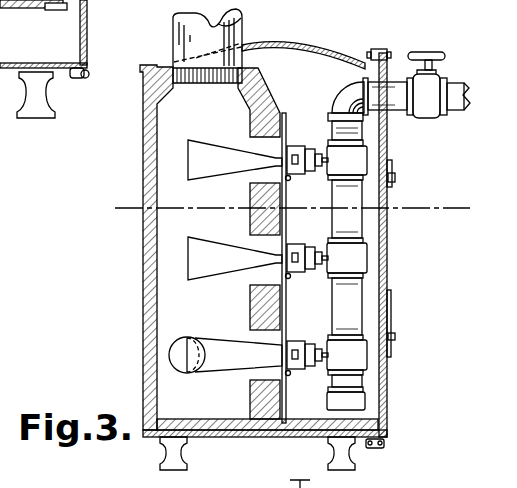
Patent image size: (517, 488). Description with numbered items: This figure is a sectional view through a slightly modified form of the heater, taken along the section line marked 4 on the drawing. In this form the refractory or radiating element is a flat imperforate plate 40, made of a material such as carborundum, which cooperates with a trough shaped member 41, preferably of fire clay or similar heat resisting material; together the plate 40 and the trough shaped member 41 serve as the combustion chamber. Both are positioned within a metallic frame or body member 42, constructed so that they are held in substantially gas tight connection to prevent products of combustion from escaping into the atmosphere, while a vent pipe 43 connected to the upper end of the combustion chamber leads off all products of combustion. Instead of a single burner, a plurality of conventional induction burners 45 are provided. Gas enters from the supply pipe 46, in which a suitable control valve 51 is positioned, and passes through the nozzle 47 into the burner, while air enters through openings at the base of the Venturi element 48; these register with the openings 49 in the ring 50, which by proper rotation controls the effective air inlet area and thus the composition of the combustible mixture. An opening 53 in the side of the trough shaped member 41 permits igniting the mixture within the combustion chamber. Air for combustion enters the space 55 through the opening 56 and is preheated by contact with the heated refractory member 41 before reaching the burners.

The section line 4- 4 is at (115, 206).
The flat imperforate plate 40 is at (153, 276).
The trough shaped member 41 is at (263, 303).
The metallic frame or body member 42 is at (384, 377).
The vent pipe 43 is at (244, 32).
The induction burners 45 is at (281, 148).
The supply pipe 46 is at (350, 198).
The nozzle 47 is at (322, 164).
The Venturi element 48 is at (210, 163).
The openings 49 is at (290, 150).
The ring 50 is at (298, 172).
The control valve 51 is at (433, 90).
The opening 53 is at (175, 357).
The space 55 is at (296, 72).
The opening 56 is at (245, 48).